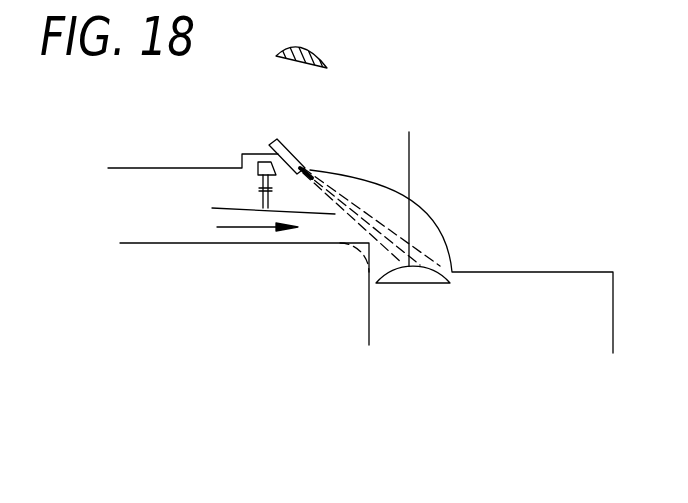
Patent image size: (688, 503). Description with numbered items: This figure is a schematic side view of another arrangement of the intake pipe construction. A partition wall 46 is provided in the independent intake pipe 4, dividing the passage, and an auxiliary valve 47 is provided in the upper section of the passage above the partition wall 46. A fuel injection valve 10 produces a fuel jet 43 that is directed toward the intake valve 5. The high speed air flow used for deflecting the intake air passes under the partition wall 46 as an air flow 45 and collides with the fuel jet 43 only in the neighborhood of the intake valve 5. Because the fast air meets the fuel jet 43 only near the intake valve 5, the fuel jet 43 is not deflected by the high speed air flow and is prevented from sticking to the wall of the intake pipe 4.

The independent intake pipe 4 is at (175, 233).
The intake valve 5 is at (422, 277).
The fuel injection valve 10 is at (275, 139).
The fuel jet 43 is at (390, 227).
The air flow 45 is at (262, 229).
The partition wall 46 is at (313, 214).
The auxiliary valve 47 is at (318, 50).